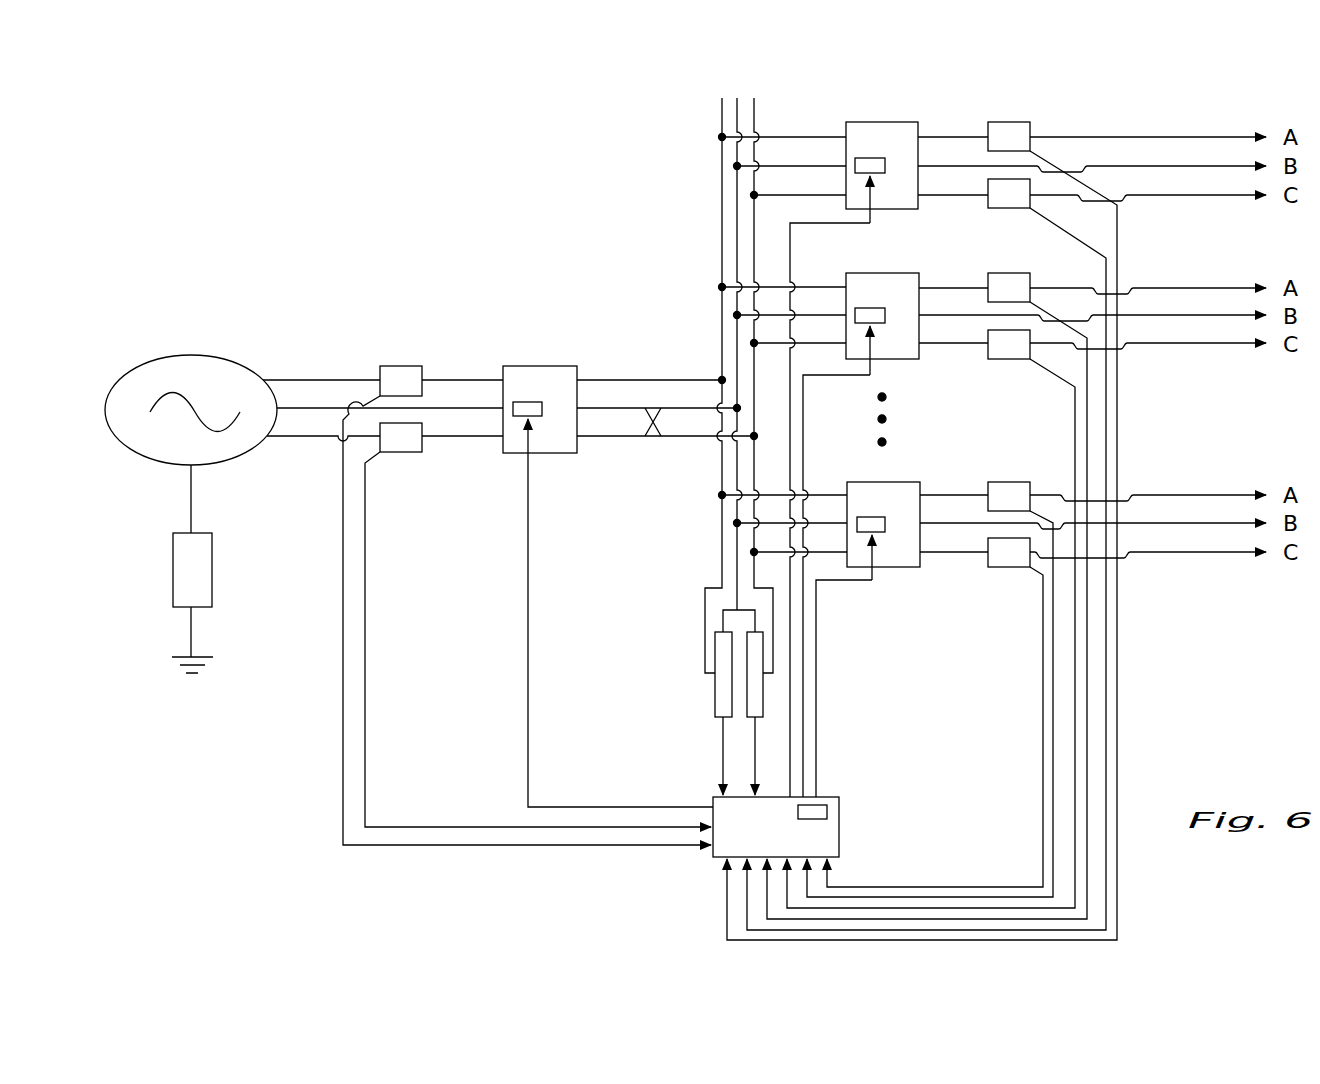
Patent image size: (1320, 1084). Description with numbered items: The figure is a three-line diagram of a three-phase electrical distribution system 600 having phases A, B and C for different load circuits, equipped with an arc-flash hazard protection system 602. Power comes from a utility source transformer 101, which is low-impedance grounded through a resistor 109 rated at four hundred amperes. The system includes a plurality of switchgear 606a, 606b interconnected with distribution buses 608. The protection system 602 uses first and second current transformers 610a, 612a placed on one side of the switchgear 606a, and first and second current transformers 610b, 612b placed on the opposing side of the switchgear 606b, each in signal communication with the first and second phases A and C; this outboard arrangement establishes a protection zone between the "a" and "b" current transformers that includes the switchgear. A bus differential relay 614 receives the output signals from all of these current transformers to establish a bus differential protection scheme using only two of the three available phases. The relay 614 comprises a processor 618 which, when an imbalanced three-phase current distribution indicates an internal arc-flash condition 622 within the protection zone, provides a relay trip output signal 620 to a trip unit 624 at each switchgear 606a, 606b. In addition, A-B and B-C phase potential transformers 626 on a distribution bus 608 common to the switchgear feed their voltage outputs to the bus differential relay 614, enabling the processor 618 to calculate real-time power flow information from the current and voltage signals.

The three-phase electrical distribution system 600 is at (238, 171).
The utility source transformer 101 is at (170, 355).
The resistor 109 is at (173, 572).
The first current transformer 610a is at (400, 366).
The second current transformer 612a is at (410, 452).
The trip unit 624 is at (527, 402).
The switchgear 606a is at (675, 320).
The distribution bus 608 is at (720, 203).
The internal arc-flash condition 622 is at (651, 448).
The relay trip output signal 620 is at (528, 710).
The potential transformers 626 is at (698, 711).
The arc-flash hazard protection system 602 is at (770, 852).
The bus differential relay 614 is at (827, 818).
The processor 618 is at (827, 812).
The switchgear 606b is at (885, 122).
The first current transformer 610b is at (1010, 122).
The second current transformer 612b is at (1010, 567).